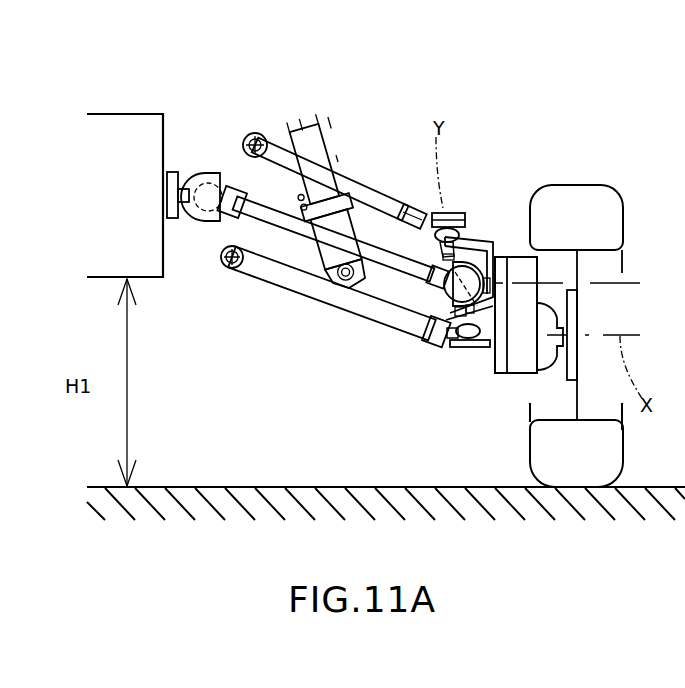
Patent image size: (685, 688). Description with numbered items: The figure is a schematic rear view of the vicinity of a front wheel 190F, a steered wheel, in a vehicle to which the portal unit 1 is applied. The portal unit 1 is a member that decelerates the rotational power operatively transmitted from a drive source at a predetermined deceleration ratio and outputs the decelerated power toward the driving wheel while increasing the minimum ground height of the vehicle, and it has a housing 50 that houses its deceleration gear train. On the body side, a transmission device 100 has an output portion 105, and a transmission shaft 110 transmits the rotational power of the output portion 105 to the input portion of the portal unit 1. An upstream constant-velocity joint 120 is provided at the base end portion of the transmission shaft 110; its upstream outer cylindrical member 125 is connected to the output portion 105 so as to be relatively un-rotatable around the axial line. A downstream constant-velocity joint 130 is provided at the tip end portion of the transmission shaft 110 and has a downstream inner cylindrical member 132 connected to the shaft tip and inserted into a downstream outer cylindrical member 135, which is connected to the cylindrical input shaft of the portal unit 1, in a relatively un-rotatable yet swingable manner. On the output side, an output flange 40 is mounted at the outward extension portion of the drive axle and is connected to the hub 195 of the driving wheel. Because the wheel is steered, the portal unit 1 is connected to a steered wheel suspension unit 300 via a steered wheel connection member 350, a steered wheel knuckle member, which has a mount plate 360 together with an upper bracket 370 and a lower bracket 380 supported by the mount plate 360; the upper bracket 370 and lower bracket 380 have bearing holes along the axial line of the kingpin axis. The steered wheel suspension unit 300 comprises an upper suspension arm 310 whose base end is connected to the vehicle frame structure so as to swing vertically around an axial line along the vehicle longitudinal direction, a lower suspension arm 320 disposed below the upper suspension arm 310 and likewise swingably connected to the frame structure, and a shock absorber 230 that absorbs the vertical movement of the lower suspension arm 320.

The portal unit 1 is at (515, 245).
The output flange 40 is at (575, 310).
The housing 50 is at (505, 380).
The transmission device 100 is at (122, 108).
The output portion 105 is at (168, 172).
The transmission shaft 110 is at (255, 197).
The upstream constant-velocity joint 120 is at (197, 219).
The upstream outer cylindrical member 125 is at (207, 221).
The downstream constant-velocity joint 130 is at (447, 303).
The downstream inner cylindrical member 132 is at (440, 290).
The downstream outer cylindrical member 135 is at (472, 316).
The front wheel 190F is at (623, 182).
The hub 195 is at (622, 273).
The shock absorber 230 is at (315, 142).
The steered wheel suspension unit 300 is at (335, 169).
The upper suspension arm 310 is at (355, 187).
The lower suspension arm 320 is at (317, 288).
The steered wheel connection member 350 is at (500, 378).
The mount plate 360 is at (492, 267).
The upper bracket 370 is at (460, 228).
The lower bracket 380 is at (450, 332).